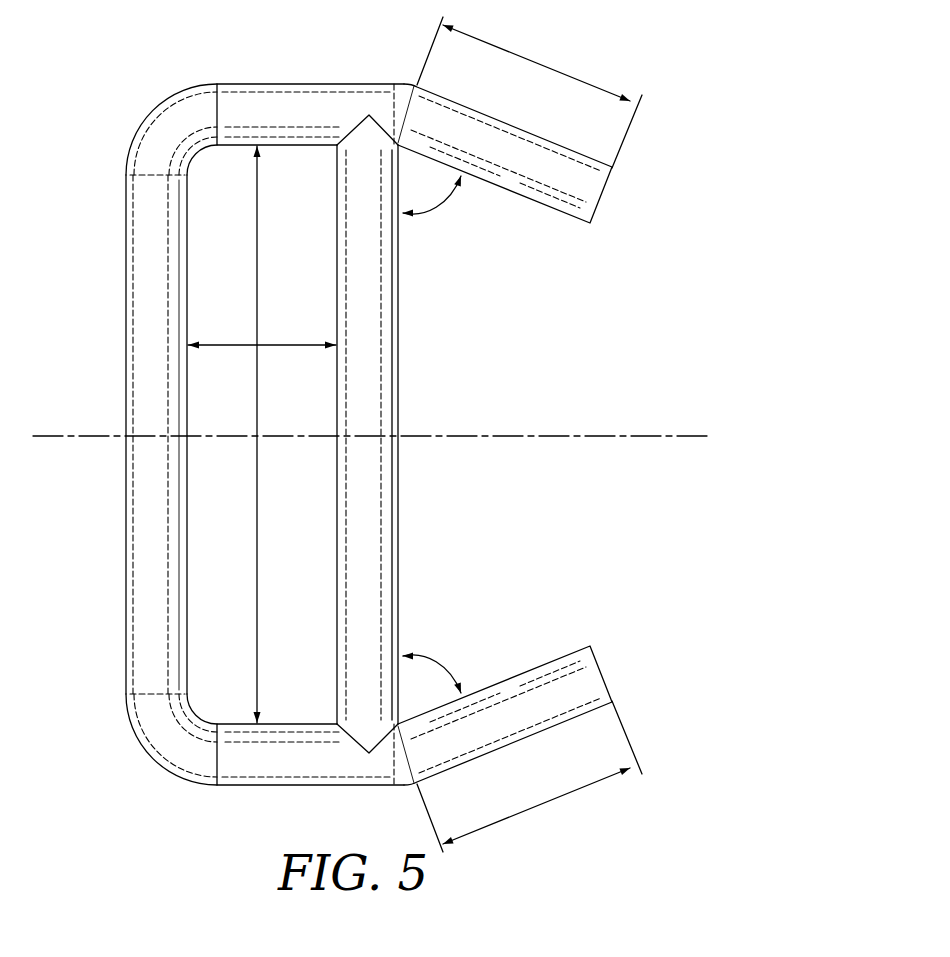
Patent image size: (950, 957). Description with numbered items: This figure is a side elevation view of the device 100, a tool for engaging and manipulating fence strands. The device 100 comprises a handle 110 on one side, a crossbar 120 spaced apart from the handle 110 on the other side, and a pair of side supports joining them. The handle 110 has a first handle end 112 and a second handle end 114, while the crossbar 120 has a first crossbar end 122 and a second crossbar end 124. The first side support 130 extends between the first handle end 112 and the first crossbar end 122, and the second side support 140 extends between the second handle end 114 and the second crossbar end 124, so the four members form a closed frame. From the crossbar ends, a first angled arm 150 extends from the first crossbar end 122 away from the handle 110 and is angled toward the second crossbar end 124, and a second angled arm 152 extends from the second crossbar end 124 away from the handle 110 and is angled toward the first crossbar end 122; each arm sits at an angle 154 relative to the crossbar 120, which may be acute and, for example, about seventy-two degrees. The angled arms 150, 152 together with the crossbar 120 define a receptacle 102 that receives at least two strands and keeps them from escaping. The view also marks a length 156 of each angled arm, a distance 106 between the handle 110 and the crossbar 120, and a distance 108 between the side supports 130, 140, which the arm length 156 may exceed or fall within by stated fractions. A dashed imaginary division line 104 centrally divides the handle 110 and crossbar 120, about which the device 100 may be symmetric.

The device 100 is at (391, 437).
The receptacle 102 is at (356, 431).
The imaginary division line 104 is at (53, 435).
The distance 106 is at (225, 343).
The distance 108 is at (255, 253).
The handle 110 is at (147, 450).
The first handle end 112 is at (150, 172).
The second handle end 114 is at (150, 700).
The crossbar 120 is at (370, 425).
The first crossbar end 122 is at (368, 132).
The second crossbar end 124 is at (368, 740).
The first side support 130 is at (302, 93).
The second side support 140 is at (290, 770).
The first angled arm 150 is at (502, 140).
The second angled arm 152 is at (493, 738).
The angle 154 is at (425, 213).
The length 156 is at (517, 53).